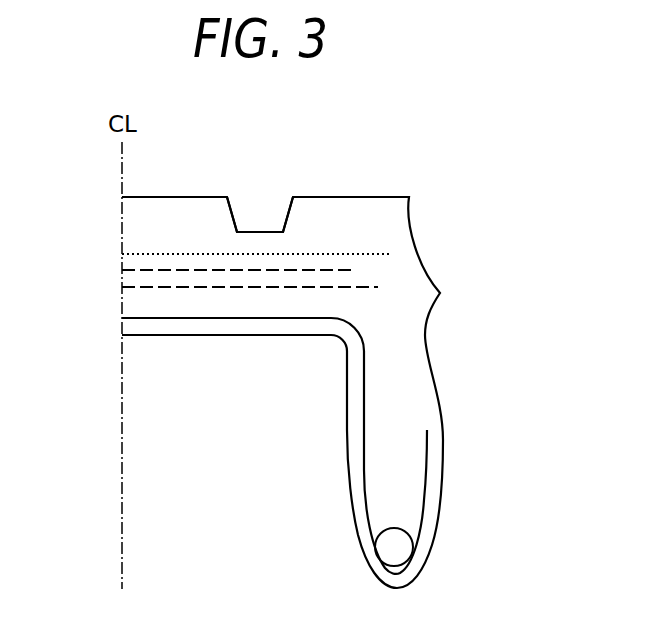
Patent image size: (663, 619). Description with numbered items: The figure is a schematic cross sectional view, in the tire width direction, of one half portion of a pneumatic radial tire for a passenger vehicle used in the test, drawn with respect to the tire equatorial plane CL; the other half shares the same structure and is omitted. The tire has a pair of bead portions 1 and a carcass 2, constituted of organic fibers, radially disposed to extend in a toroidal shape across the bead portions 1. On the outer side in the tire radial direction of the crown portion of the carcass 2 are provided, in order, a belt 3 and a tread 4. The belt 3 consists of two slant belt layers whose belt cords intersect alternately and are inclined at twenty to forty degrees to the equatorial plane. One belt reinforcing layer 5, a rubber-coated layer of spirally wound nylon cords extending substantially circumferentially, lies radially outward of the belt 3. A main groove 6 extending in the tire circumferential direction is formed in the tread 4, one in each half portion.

The bead portion 1 is at (445, 513).
The carcass 2 is at (363, 397).
The belt 3 is at (106, 271).
The tread 4 is at (339, 197).
The belt reinforcing layer 5 is at (106, 246).
The main groove 6 is at (259, 213).